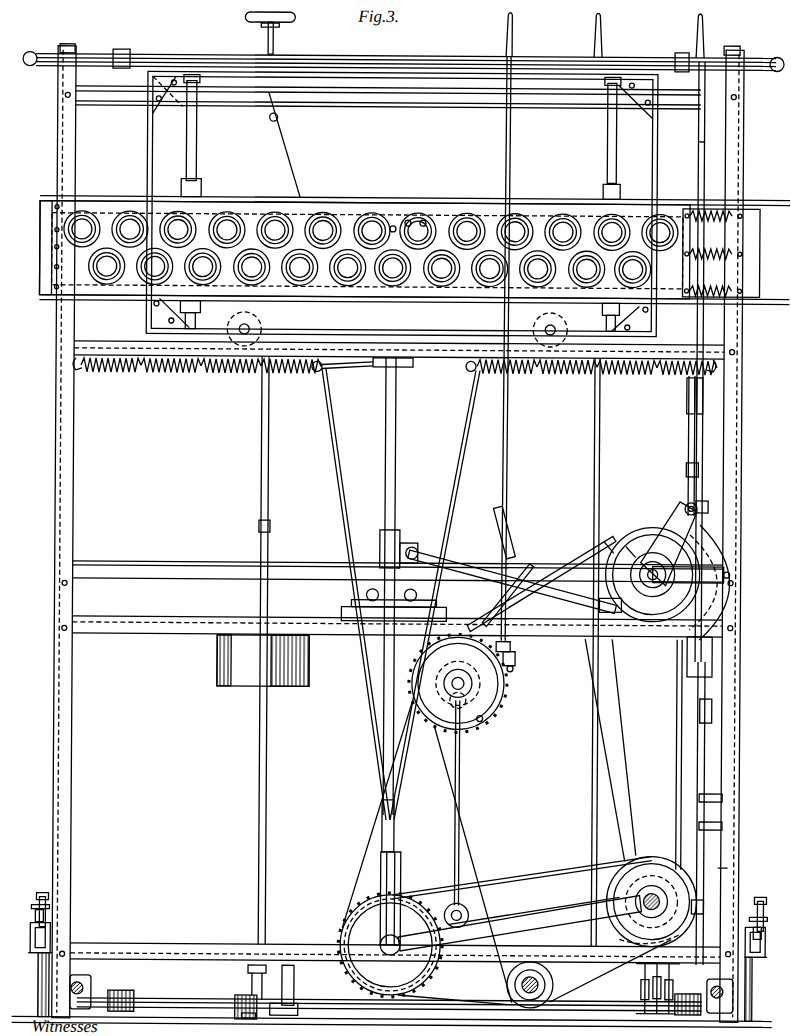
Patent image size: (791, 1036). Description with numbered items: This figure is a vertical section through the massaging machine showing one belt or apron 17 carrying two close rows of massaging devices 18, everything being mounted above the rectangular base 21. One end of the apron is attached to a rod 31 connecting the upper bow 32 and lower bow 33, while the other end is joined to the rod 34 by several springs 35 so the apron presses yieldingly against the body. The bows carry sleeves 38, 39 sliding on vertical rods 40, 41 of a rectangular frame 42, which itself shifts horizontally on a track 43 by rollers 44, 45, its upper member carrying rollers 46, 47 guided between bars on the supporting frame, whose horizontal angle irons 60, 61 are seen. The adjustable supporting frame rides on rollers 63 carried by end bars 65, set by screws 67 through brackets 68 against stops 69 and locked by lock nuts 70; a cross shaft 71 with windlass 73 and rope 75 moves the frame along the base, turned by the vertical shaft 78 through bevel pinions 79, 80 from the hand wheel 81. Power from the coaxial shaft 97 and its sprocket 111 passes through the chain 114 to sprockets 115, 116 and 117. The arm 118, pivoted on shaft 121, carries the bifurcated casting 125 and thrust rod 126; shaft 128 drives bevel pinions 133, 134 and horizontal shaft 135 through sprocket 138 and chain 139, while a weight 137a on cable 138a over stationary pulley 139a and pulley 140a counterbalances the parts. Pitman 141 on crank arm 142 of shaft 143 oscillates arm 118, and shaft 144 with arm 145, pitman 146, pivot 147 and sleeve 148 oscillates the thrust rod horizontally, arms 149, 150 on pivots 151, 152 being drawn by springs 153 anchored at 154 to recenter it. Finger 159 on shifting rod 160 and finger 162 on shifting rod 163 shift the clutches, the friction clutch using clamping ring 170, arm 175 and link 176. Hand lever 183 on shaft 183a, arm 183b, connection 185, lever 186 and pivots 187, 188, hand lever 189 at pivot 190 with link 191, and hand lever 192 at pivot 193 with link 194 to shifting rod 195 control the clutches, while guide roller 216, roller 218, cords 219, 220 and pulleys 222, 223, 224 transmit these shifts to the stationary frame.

The belt or apron 17 is at (453, 214).
The massaging devices 18 is at (320, 220).
The rectangular base 21 is at (46, 993).
The rod 31 is at (50, 198).
The upper bow 32 is at (100, 198).
The lower bow 33 is at (114, 302).
The rod 34 is at (743, 204).
The springs 35 is at (723, 207).
The sleeve 38 is at (200, 189).
The sleeve 39 is at (601, 191).
The vertical rod 40 is at (195, 137).
The vertical rod 41 is at (605, 150).
The rectangular frame 42 is at (398, 95).
The horizontal track 43 is at (658, 350).
The roller 44 is at (230, 340).
The roller 45 is at (538, 342).
The roller 46 is at (210, 58).
The roller 47 is at (588, 58).
The horizontal angle iron 60 is at (120, 372).
The horizontal angle iron 61 is at (125, 563).
The roller 63 is at (54, 938).
The adjustable end bar 65 is at (54, 960).
The screw 67 is at (52, 898).
The bracket 68 is at (28, 900).
The stop 69 is at (38, 920).
The lock nut 70 is at (52, 908).
The cross shaft 71 is at (190, 1001).
The spool or windlass 73 is at (136, 1001).
The rope or wire 75 is at (124, 997).
The vertical shaft 78 is at (260, 460).
The bevel pinion 79 is at (250, 986).
The bevel pinion 80 is at (250, 1016).
The hand wheel 81 is at (243, 18).
The coaxial shaft 97 is at (530, 995).
The sprocket 111 is at (556, 985).
The chain 114 is at (706, 765).
The sprocket 115 is at (690, 874).
The sprocket 116 is at (635, 533).
The sprocket 117 is at (491, 715).
The arm 118 is at (533, 919).
The shaft 121 is at (638, 898).
The bifurcated casting 125 is at (402, 885).
The thrust rod 126 is at (385, 496).
The shaft 128 is at (382, 945).
The bevel pinion 133 is at (422, 214).
The bevel pinion 134 is at (406, 214).
The horizontal shaft 135 is at (391, 214).
The weight 137a is at (239, 688).
The sprocket 138 is at (362, 976).
The cable 138a is at (261, 527).
The chain 139 is at (532, 868).
The stationary pulley 139a is at (282, 118).
The pulley 140a is at (384, 821).
The pitman 141 is at (463, 819).
The crank arm 142 is at (491, 719).
The shaft 143 is at (479, 691).
The shaft 144 is at (731, 575).
The arm 145 is at (586, 598).
The pitman 146 is at (474, 570).
The pivot 147 is at (424, 553).
The sleeve 148 is at (380, 545).
The arm 149 is at (371, 441).
The arm 150 is at (410, 461).
The pivot 151 is at (366, 596).
The pivot 152 is at (420, 596).
The spring 153 is at (210, 374).
The spring attachment 154 is at (58, 372).
The finger 159 is at (730, 865).
The shifting rod 160 is at (700, 903).
The finger 162 is at (519, 671).
The shifting rod 163 is at (519, 659).
The clamping ring 170 is at (663, 545).
The straight arm 175 is at (626, 545).
The link 176 is at (608, 545).
The hand lever 183 is at (594, 471).
The shaft 183a is at (646, 636).
The arm 183b is at (712, 667).
The pin-and-slot connection 185 is at (712, 710).
The lever 186 is at (702, 800).
The pivot 187 is at (700, 826).
The pivot 188 is at (400, 952).
The hand lever 189 is at (503, 152).
The pivot 190 is at (534, 578).
The link 191 is at (519, 646).
The hand lever 192 is at (698, 151).
The pivot 193 is at (688, 471).
The link 194 is at (685, 513).
The shifting rod 195 is at (700, 509).
The guide roller 216 is at (672, 981).
The roller 218 is at (658, 1000).
The cord 219 is at (677, 709).
The cord 220 is at (625, 800).
The pulley 222 is at (688, 405).
The pulley 223 is at (513, 524).
The pulley 224 is at (583, 565).